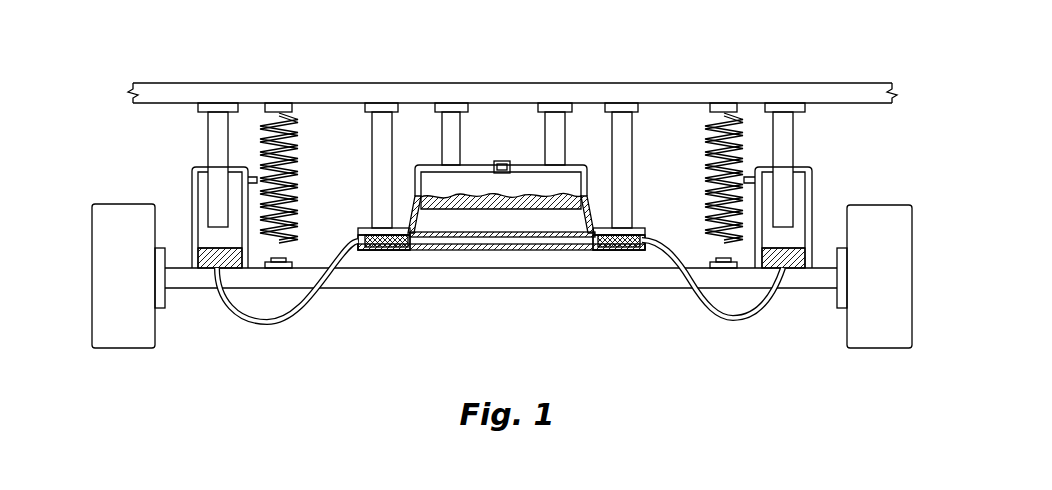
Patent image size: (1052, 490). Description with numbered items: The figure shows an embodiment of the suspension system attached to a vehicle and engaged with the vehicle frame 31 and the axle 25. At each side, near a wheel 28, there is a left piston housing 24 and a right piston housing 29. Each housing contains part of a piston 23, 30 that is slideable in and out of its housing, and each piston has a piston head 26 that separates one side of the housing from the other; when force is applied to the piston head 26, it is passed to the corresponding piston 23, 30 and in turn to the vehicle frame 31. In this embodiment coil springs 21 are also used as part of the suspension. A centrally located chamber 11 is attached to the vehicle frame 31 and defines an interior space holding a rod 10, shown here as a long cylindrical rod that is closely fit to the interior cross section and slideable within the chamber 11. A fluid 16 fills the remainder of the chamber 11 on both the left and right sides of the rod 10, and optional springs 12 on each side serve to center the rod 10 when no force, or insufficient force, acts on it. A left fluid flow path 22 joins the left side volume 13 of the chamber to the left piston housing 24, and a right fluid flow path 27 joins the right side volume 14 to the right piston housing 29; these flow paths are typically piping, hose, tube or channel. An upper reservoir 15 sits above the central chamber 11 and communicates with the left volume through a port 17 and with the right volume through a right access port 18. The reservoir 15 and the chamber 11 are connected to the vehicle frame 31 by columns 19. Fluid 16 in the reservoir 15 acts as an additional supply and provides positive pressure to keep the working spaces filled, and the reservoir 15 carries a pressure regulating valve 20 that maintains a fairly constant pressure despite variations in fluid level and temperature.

The rod 10 is at (447, 238).
The chamber 11 is at (482, 249).
The springs 12 is at (370, 247).
The left side volume 13 is at (393, 243).
The right side volume 14 is at (622, 238).
The upper reservoir 15 is at (467, 165).
The fluid 16 is at (437, 200).
The port 17 is at (408, 234).
The right access port 18 is at (595, 233).
The column 19 is at (382, 123).
The pressure regulating valve 20 is at (501, 161).
The coil springs 21 is at (259, 114).
The left fluid flow path 22 is at (253, 318).
The piston 23 is at (217, 195).
The left piston housing 24 is at (192, 207).
The axle 25 is at (175, 280).
The piston head 26 is at (210, 232).
The right fluid flow path 27 is at (743, 317).
The wheel 28 is at (103, 258).
The right piston housing 29 is at (810, 177).
The piston 30 is at (785, 131).
The vehicle frame 31 is at (812, 96).